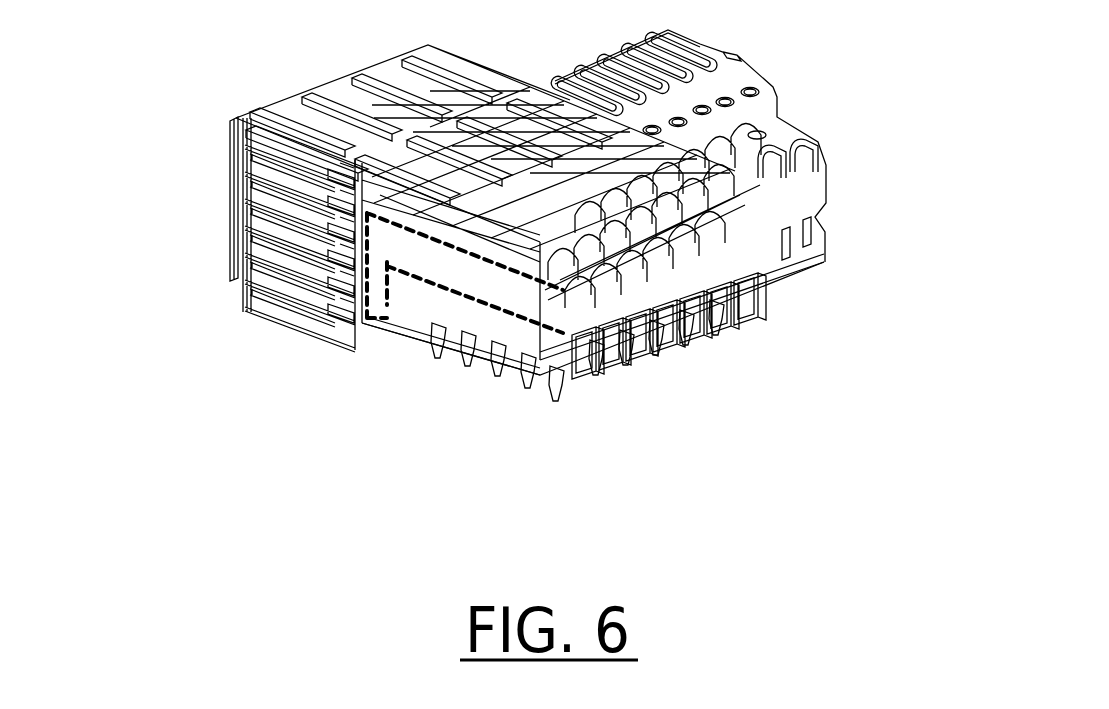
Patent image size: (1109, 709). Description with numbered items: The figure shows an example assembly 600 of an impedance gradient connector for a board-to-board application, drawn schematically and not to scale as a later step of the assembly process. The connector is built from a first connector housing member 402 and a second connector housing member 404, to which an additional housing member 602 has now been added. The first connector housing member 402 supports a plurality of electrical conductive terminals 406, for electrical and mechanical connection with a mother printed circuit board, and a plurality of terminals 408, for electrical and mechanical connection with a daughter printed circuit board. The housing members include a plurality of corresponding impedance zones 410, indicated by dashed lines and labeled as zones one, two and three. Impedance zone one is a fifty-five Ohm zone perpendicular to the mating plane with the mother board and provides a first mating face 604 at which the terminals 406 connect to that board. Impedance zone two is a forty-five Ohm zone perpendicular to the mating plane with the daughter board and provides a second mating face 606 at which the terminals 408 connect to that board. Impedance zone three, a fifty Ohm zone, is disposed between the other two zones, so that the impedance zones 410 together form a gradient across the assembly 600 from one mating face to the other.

The assembly 600 is at (332, 32).
The first connector housing member 402 is at (727, 312).
The second connector housing member 404 is at (290, 135).
The terminals 406 is at (477, 363).
The terminals 408 is at (258, 275).
The impedance zones 410 is at (673, 392).
The additional housing member 602 is at (776, 117).
The first mating face 604 is at (425, 319).
The second mating face 606 is at (232, 174).